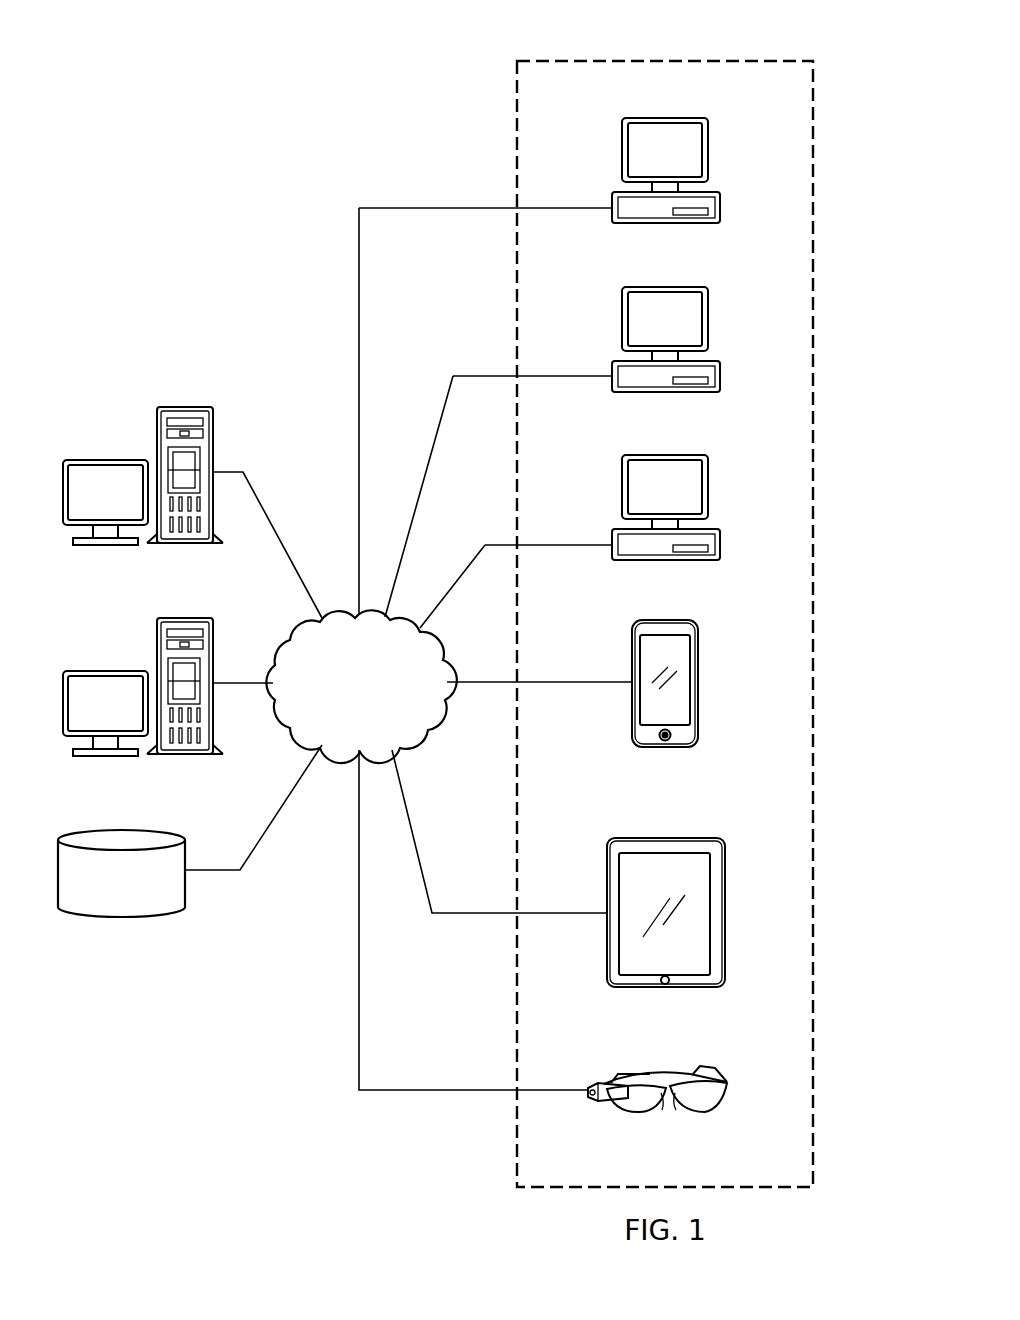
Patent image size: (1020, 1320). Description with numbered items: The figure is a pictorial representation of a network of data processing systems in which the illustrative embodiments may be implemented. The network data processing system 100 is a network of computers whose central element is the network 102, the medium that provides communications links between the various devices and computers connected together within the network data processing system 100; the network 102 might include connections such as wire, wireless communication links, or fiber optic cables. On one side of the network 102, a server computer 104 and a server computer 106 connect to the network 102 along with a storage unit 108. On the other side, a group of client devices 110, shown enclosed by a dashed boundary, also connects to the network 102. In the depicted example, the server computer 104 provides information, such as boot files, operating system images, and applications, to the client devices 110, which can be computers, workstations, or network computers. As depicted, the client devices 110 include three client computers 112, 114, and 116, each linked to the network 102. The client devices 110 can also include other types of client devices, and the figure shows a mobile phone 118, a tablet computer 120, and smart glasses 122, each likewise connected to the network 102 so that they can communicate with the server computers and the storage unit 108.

The network data processing system 100 is at (233, 289).
The network 102 is at (339, 711).
The server computer 104 is at (103, 458).
The server computer 106 is at (103, 669).
The storage unit 108 is at (119, 917).
The client devices 110 is at (729, 52).
The client computer 112 is at (708, 152).
The client computer 114 is at (708, 321).
The client computer 116 is at (708, 489).
The mobile phone 118 is at (698, 700).
The tablet computer 120 is at (725, 925).
The smart glasses 122 is at (727, 1097).